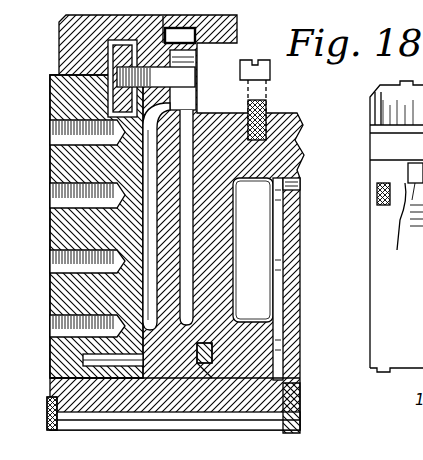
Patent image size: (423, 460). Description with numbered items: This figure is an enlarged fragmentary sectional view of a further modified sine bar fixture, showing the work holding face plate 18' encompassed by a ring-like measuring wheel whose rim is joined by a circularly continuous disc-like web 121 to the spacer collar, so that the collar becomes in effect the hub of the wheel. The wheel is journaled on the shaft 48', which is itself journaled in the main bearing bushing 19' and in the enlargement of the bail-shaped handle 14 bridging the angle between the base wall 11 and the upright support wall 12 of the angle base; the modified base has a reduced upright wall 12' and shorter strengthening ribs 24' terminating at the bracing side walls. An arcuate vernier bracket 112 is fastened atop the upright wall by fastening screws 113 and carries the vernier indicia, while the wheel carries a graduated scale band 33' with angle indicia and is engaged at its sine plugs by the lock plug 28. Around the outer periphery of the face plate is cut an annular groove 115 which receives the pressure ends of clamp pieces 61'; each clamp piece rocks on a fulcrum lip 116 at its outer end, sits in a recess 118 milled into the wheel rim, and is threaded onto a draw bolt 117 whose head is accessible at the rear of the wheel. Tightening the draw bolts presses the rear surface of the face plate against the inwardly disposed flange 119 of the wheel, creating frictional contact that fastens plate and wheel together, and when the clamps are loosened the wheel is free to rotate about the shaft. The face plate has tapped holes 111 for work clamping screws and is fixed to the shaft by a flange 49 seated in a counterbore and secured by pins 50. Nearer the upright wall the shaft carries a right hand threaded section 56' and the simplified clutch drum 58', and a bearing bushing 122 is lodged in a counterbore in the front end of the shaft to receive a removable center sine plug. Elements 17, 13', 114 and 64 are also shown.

The fulcrum lip 116 is at (108, 50).
The clamp pieces 61' is at (65, 54).
The recess 118 is at (72, 69).
The draw bolt 117 is at (108, 79).
The annular groove 115 is at (108, 110).
The tapped holes 111 is at (65, 135).
The face plate 18' is at (90, 139).
The flange 119 is at (52, 171).
The disc-like web 121 is at (165, 221).
The pins 50 is at (85, 359).
The bearing bushing 122 is at (50, 420).
The upright support wall 12 is at (50, 446).
The flange 49 is at (115, 420).
The graduated scale band 33' is at (172, 253).
The shaft 48' is at (175, 417).
The right hand threaded section 56' is at (312, 408).
The clutch drum 58' is at (302, 279).
The main bearing bushing 19' is at (259, 297).
The strengthening ribs 24' is at (261, 245).
The upright wall 12' is at (320, 250).
The handle 14 is at (303, 153).
The arcuate vernier bracket 112 is at (240, 33).
The fastening screws 113 is at (272, 70).
The arm 64 is at (178, 110).
The bracket 114 is at (380, 172).
The lock plug 28 is at (383, 205).
The base wall 11 is at (396, 226).
The gauge base 17 is at (378, 370).
The plunger 13' is at (410, 228).